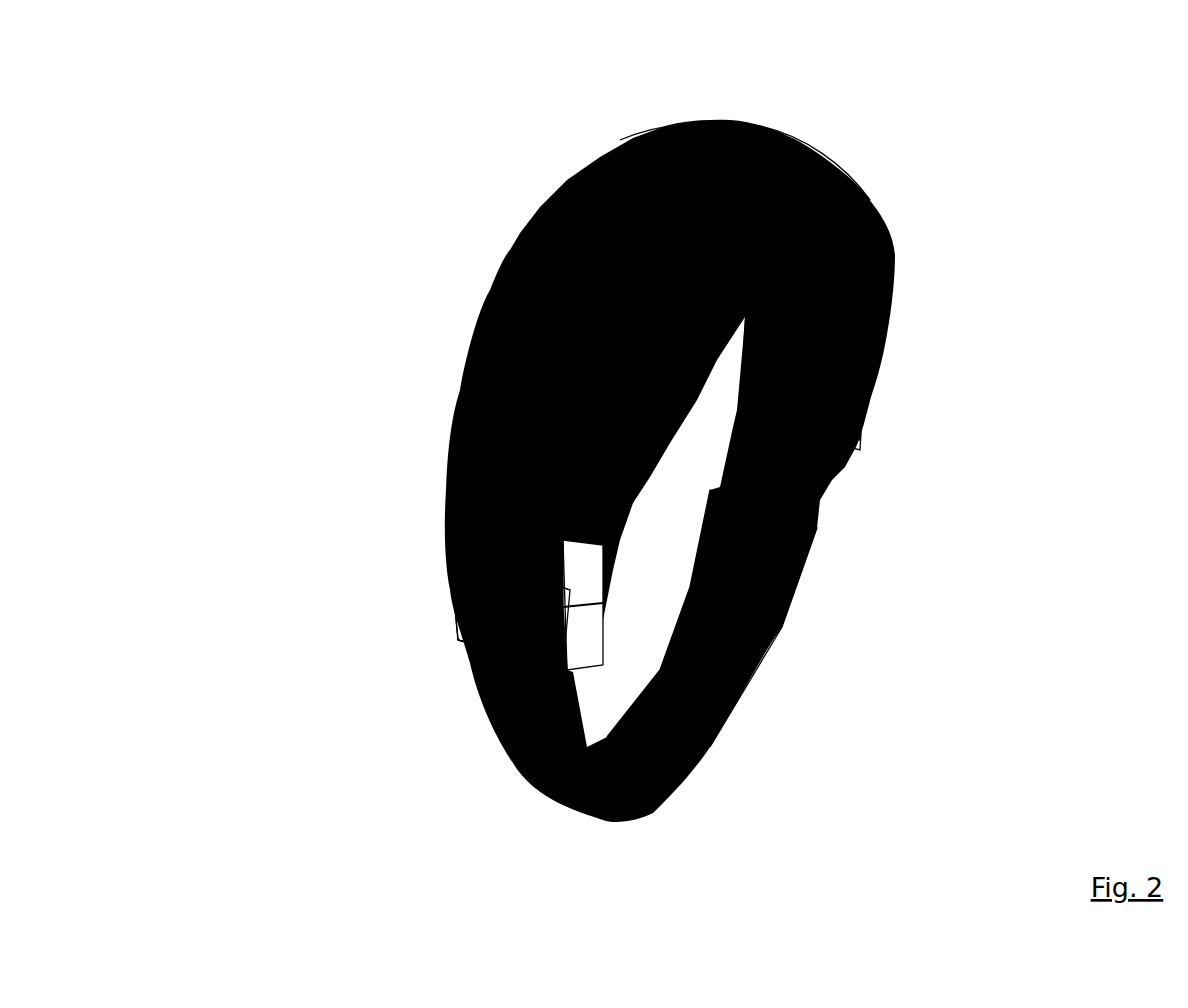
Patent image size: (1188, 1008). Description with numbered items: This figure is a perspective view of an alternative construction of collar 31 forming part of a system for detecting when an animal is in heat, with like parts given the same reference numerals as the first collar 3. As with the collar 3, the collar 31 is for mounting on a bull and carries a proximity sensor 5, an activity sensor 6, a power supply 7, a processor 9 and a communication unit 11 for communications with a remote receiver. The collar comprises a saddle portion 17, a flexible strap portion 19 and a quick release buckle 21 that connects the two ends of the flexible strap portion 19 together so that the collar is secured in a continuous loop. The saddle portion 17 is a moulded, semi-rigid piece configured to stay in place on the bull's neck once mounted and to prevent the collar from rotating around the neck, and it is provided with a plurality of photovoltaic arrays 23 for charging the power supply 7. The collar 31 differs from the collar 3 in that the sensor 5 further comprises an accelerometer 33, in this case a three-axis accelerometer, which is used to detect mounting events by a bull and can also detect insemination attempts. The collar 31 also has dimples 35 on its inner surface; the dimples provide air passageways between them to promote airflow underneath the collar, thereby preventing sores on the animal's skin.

The collar 3 is at (457, 702).
The proximity sensor 5 is at (467, 593).
The activity sensor 6 is at (490, 627).
The power supply 7 is at (870, 396).
The processor 9 is at (510, 473).
The communication unit 11 is at (472, 528).
The saddle portion 17 is at (858, 188).
The flexible strap portion 19 is at (745, 683).
The quick release buckle 21 is at (797, 568).
The photovoltaic arrays 23 is at (648, 170).
The collar 31 is at (318, 140).
The accelerometer 33 is at (463, 613).
The dimples 35 is at (853, 252).